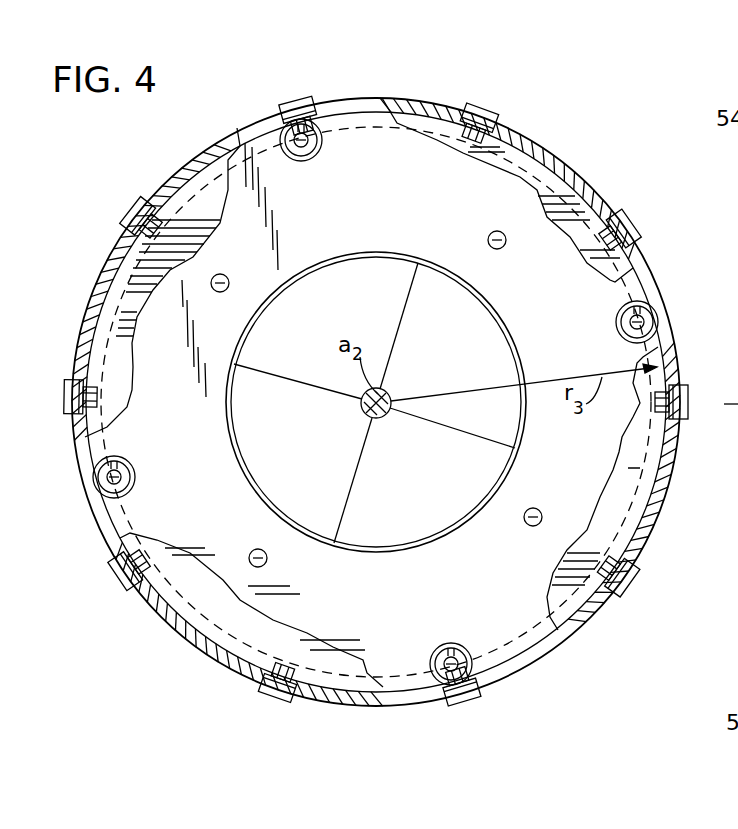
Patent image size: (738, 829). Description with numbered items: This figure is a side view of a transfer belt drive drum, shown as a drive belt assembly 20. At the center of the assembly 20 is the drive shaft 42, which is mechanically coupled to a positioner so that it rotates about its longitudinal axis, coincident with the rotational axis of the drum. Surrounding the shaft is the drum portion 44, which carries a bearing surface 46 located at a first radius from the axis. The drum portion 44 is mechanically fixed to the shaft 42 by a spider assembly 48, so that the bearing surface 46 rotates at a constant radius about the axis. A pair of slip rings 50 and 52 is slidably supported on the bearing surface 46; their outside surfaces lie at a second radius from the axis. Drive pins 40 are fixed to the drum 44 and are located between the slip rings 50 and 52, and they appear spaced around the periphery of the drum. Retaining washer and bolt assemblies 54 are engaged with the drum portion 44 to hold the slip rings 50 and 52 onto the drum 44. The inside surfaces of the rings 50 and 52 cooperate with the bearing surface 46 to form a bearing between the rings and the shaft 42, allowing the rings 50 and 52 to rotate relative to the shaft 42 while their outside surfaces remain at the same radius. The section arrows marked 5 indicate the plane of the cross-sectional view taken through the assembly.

The drive belt assembly 20 is at (276, 722).
The drive pins 40 is at (300, 97).
The drive shaft 42 is at (385, 415).
The drum portion 44 is at (493, 218).
The bearing surface 46 is at (385, 97).
The spider assembly 48 is at (405, 322).
The slip ring 50 is at (237, 130).
The slip ring 52 is at (535, 135).
The retaining washer and bolt assemblies 54 is at (322, 146).
The section line 5 is at (277, 48).